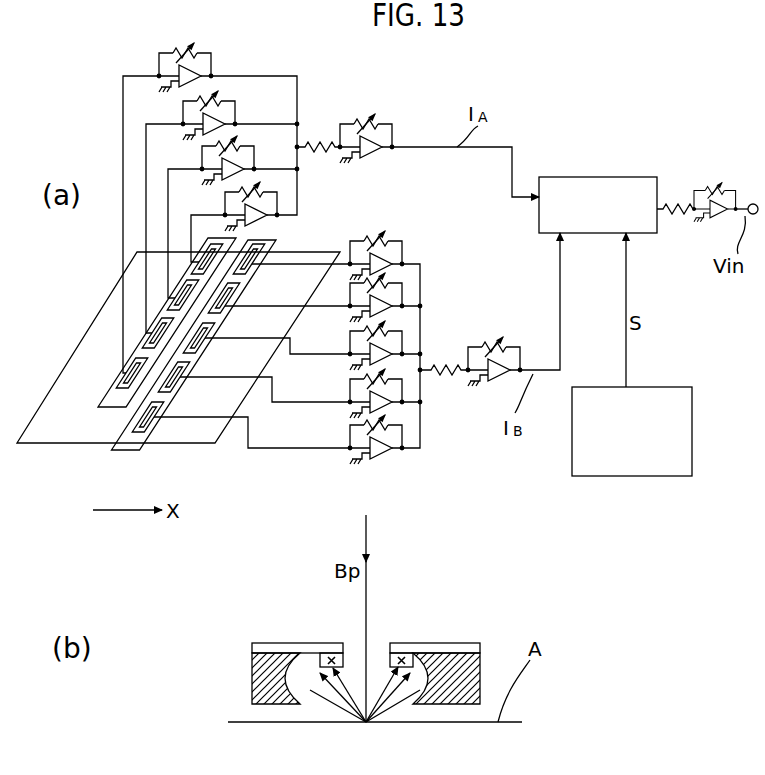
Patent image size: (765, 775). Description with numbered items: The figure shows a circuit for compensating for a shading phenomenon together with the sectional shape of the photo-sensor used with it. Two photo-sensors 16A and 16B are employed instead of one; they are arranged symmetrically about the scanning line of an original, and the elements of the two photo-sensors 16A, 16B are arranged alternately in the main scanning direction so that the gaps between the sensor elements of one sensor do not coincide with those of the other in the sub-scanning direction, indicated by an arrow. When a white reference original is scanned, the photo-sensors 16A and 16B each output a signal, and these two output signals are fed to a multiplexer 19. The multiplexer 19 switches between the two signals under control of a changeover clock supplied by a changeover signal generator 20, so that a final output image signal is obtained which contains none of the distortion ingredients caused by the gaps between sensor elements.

The photo-sensor 16A is at (327, 653).
The photo-sensor 16B is at (145, 450).
The multiplexer 19 is at (598, 181).
The changeover signal generator 20 is at (693, 398).